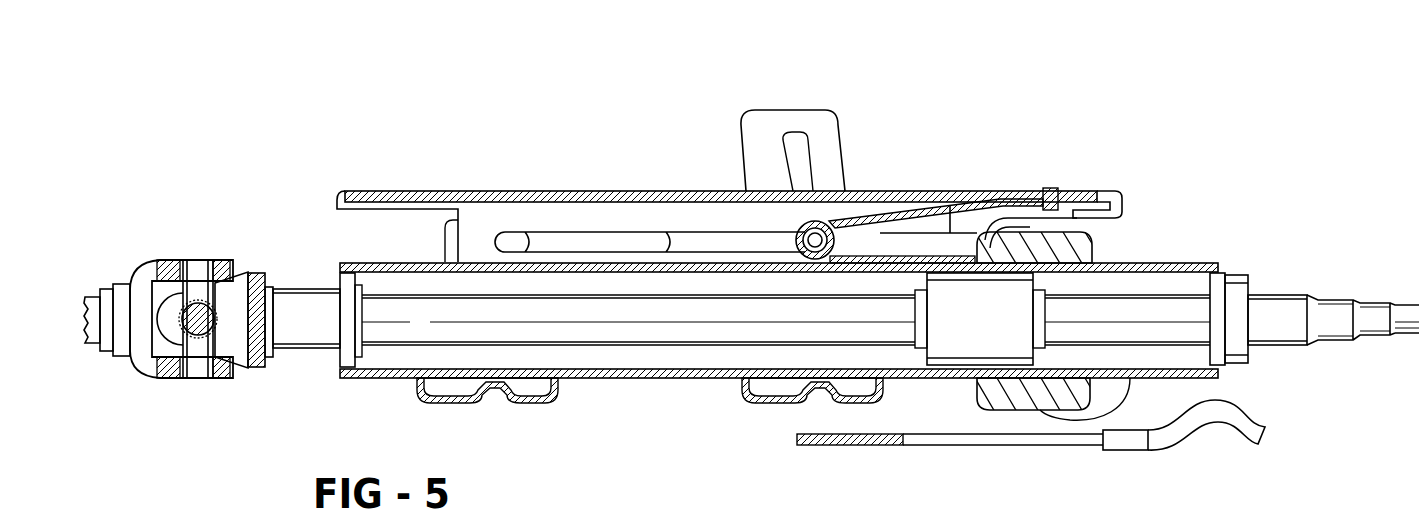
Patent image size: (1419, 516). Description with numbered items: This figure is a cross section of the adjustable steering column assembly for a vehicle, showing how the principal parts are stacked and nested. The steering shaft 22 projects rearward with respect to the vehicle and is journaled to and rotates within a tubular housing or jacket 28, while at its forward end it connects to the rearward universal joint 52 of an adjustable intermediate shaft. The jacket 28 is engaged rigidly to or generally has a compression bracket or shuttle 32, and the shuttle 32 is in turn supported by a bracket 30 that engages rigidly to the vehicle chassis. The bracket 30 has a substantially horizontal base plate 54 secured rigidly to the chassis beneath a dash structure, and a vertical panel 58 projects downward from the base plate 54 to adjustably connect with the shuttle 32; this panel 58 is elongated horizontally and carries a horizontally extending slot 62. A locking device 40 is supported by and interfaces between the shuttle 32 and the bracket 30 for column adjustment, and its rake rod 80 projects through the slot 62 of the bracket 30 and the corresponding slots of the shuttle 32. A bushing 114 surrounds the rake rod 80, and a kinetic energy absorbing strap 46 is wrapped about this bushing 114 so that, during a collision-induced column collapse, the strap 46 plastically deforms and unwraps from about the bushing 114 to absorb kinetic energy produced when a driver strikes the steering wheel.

The steering shaft 22 is at (304, 274).
The jacket 28 is at (623, 390).
The bracket 30 is at (568, 182).
The shuttle 32 is at (755, 100).
The locking device 40 is at (1050, 458).
The strap 46 is at (1073, 213).
The rearward universal joint 52 is at (172, 250).
The base plate 54 is at (898, 204).
The vertical panel 58 is at (950, 222).
The slot 62 is at (960, 243).
The rake rod 80 is at (823, 240).
The bushing 114 is at (817, 222).